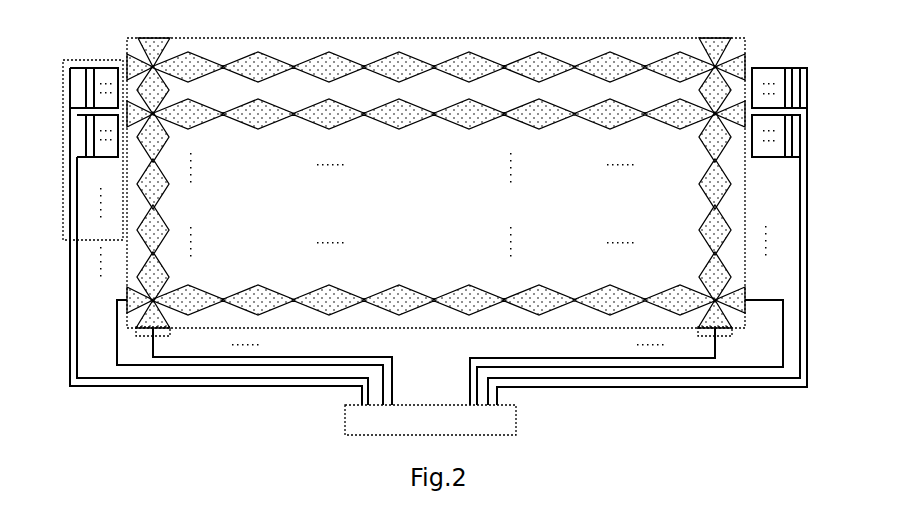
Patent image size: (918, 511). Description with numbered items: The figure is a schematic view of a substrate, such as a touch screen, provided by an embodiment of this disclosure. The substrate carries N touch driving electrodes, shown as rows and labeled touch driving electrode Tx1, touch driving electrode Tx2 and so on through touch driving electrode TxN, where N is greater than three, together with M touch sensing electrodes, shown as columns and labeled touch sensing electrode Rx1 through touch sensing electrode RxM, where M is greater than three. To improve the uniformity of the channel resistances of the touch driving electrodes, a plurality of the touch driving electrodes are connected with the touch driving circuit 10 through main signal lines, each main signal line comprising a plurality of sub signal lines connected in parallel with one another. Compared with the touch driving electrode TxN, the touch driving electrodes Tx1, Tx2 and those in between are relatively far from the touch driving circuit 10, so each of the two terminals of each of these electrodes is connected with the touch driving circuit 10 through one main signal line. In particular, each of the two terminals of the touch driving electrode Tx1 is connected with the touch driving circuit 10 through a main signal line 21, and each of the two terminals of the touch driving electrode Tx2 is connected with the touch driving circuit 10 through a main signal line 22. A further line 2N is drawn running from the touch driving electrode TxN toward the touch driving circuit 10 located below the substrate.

The touch driving electrode Tx1 is at (195, 60).
The touch driving electrode Tx2 is at (200, 116).
The touch driving electrode TxN is at (260, 290).
The touch sensing electrode Rx1 is at (158, 238).
The touch sensing electrode RxM is at (716, 237).
The main signal line 21 is at (70, 150).
The main signal line 22 is at (76, 207).
The Nth transmitting electrode wire 2N is at (117, 330).
The touch driving circuit 10 is at (516, 418).